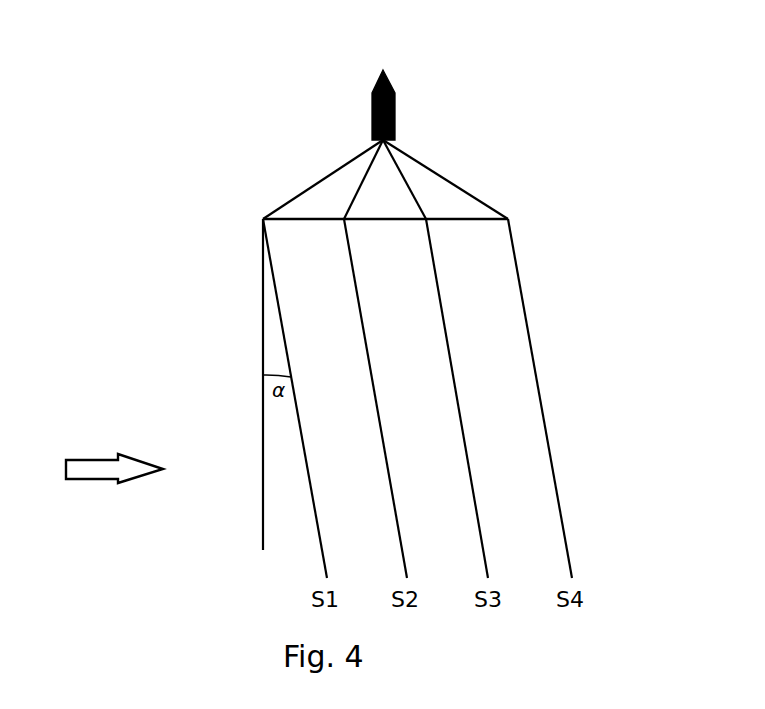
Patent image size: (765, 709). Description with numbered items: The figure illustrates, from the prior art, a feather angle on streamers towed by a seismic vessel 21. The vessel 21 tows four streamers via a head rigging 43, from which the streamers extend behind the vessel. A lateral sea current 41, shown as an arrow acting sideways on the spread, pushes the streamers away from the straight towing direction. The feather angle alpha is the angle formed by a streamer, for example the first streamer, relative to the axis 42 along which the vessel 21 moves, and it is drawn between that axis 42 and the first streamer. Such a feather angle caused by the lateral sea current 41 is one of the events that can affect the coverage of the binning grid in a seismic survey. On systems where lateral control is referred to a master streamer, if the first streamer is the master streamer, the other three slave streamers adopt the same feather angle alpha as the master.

The seismic vessel 21 is at (395, 105).
The lateral sea current 41 is at (93, 479).
The axis along which the vessel moves 42 is at (262, 415).
The head rigging 43 is at (465, 219).